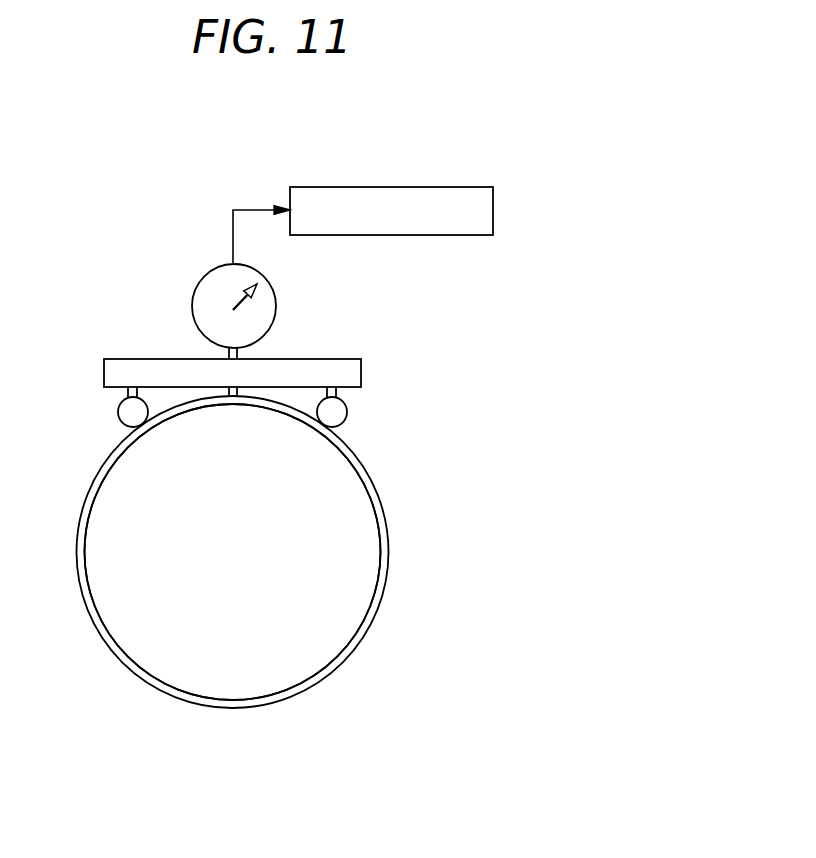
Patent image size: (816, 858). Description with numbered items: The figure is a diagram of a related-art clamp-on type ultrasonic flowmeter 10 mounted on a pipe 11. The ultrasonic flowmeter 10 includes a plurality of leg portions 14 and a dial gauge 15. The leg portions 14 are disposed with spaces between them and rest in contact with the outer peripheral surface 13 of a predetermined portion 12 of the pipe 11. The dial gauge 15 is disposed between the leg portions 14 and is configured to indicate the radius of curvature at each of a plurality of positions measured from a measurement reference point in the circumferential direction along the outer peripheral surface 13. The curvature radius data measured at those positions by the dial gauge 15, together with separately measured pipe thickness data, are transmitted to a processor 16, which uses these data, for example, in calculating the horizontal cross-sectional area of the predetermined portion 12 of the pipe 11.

The ultrasonic flowmeter 10 is at (338, 295).
The pipe 11 is at (280, 668).
The predetermined portion 12 is at (412, 484).
The outer peripheral surface 13 is at (388, 568).
The leg portions 14 is at (138, 415).
The dial gauge 15 is at (200, 296).
The processor 16 is at (468, 187).